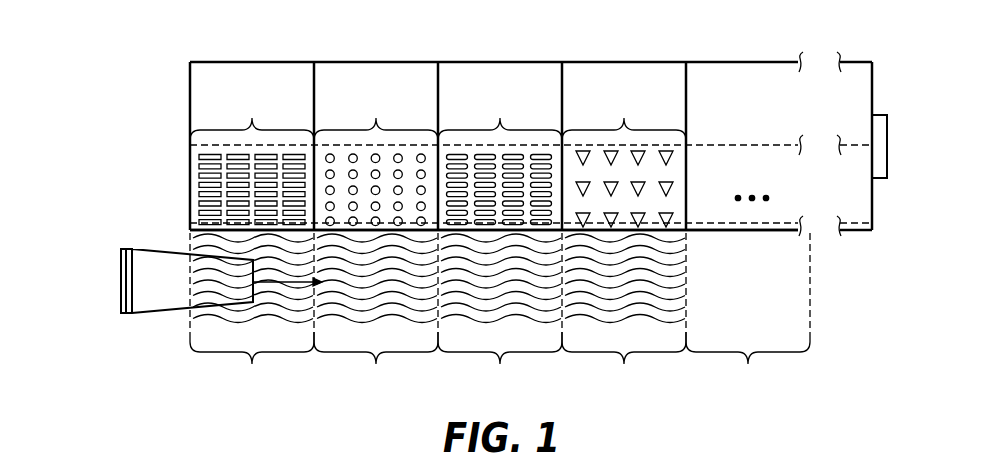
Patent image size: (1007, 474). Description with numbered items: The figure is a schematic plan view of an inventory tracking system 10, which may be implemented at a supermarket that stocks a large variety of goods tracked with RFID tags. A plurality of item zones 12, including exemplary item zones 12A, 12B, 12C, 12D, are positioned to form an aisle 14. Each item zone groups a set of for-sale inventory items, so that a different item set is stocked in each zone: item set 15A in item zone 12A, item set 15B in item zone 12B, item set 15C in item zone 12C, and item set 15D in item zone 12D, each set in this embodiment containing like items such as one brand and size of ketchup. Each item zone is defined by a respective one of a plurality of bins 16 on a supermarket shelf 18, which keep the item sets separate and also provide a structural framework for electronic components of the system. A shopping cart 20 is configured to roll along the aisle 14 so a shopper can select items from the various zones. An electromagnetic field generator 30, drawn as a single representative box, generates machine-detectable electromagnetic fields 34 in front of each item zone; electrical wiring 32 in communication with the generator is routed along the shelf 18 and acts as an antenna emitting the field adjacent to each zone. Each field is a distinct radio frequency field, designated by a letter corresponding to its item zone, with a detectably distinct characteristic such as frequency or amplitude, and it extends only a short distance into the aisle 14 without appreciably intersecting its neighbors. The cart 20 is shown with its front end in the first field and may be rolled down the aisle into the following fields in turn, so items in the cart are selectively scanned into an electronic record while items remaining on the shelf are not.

The inventory tracking system 10 is at (881, 204).
The item zones 12 is at (189, 188).
The item zone 12A is at (283, 123).
The item zone 12B is at (416, 123).
The item zone 12C is at (538, 123).
The item zone 12D is at (661, 123).
The aisle 14 is at (177, 319).
The item set 15A is at (252, 118).
The item set 15B is at (376, 118).
The item set 15C is at (500, 118).
The item set 15D is at (624, 118).
The bins 16 is at (227, 144).
The shelf 18 is at (763, 234).
The shopping cart 20 is at (121, 285).
The electromagnetic field generator 30 is at (888, 135).
The electrical wiring 32 is at (693, 222).
The electromagnetic fields 34 is at (508, 315).